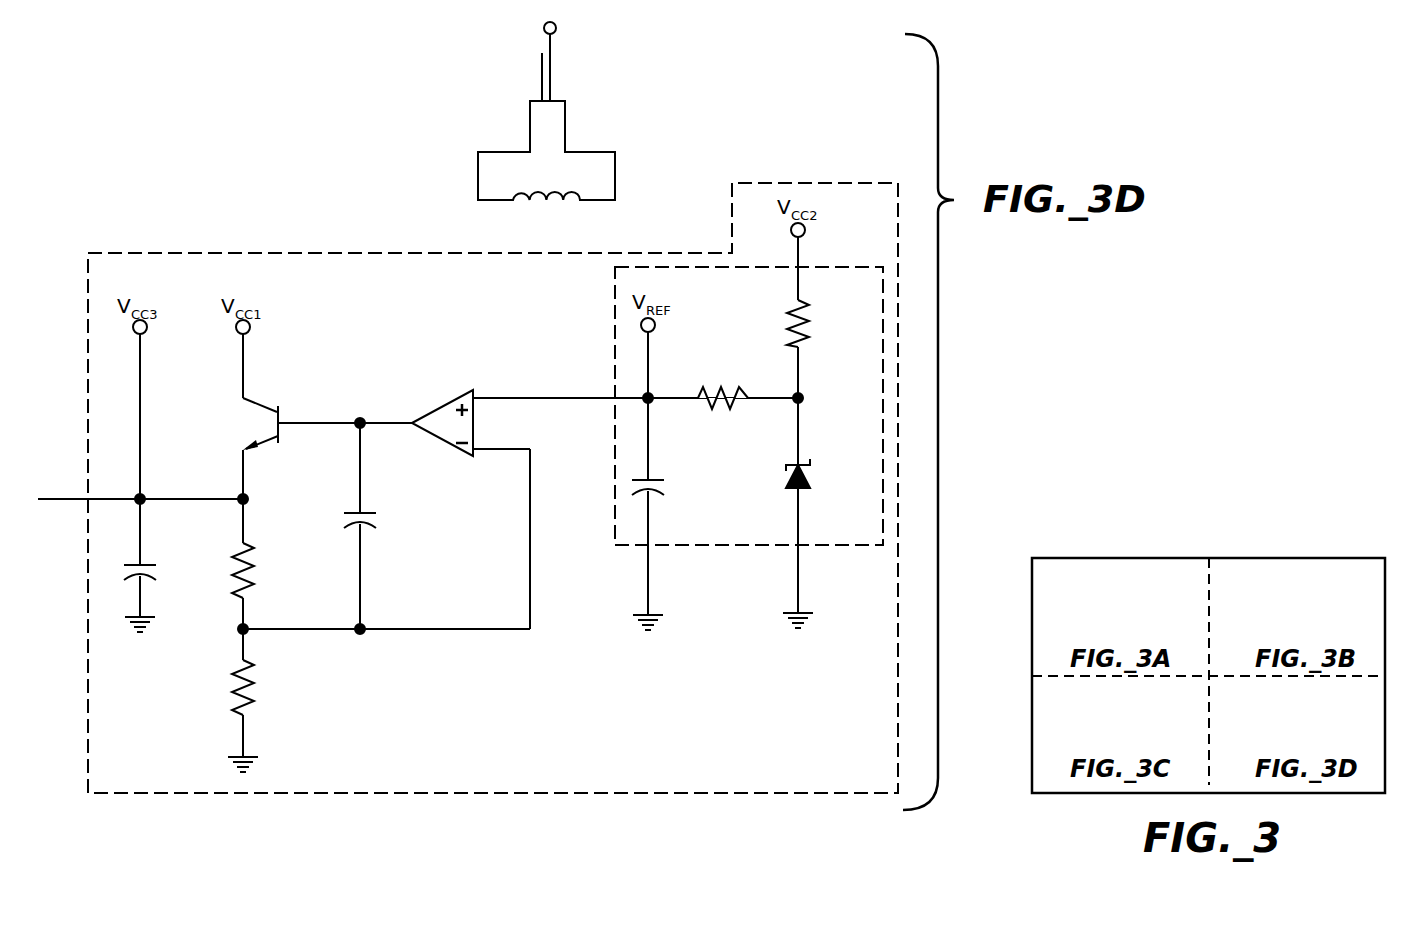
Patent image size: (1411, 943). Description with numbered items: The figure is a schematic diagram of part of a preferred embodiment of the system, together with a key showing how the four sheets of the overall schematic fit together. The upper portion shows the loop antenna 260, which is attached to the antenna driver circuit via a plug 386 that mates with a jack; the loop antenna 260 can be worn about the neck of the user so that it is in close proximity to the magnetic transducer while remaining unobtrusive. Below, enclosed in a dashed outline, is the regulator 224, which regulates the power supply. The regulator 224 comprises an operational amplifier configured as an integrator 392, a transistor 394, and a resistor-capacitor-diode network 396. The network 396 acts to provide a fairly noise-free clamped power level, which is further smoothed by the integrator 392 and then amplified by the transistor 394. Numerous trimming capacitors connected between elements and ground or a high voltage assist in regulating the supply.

The regulator 224 is at (233, 251).
The loop antenna 260 is at (616, 166).
The plug 386 is at (581, 25).
The integrator 392 is at (452, 394).
The transistor 394 is at (269, 383).
The resistor-capacitor-diode network 396 is at (812, 548).